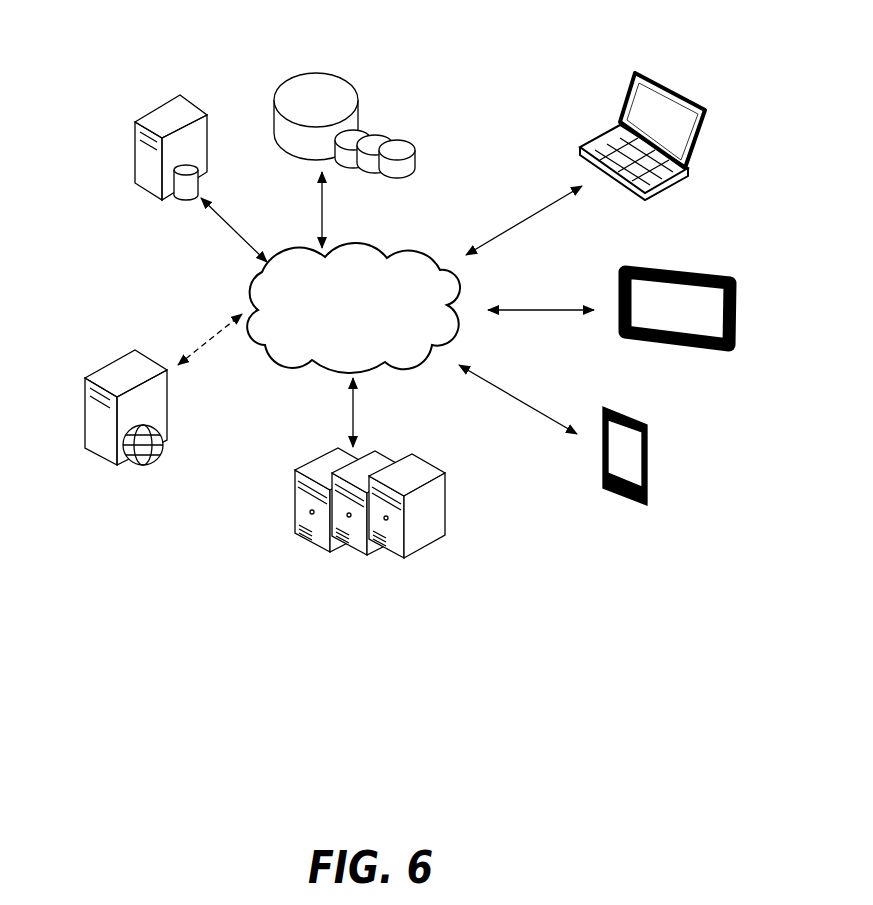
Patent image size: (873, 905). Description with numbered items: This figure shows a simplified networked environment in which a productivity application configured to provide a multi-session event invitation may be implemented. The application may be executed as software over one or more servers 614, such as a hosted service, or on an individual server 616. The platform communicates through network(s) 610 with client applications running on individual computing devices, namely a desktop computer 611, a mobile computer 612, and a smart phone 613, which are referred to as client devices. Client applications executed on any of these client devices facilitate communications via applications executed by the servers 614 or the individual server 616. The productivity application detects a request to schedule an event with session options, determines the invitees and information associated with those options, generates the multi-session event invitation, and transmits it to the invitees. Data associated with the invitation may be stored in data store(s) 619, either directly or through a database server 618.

The network(s) 610 is at (358, 233).
The desktop computer 611 is at (676, 73).
The mobile computer 612 is at (711, 245).
The smart phone 613 is at (654, 420).
The servers 614 is at (320, 450).
The individual server 616 is at (105, 353).
The database server 618 is at (172, 207).
The data store(s) 619 is at (333, 50).